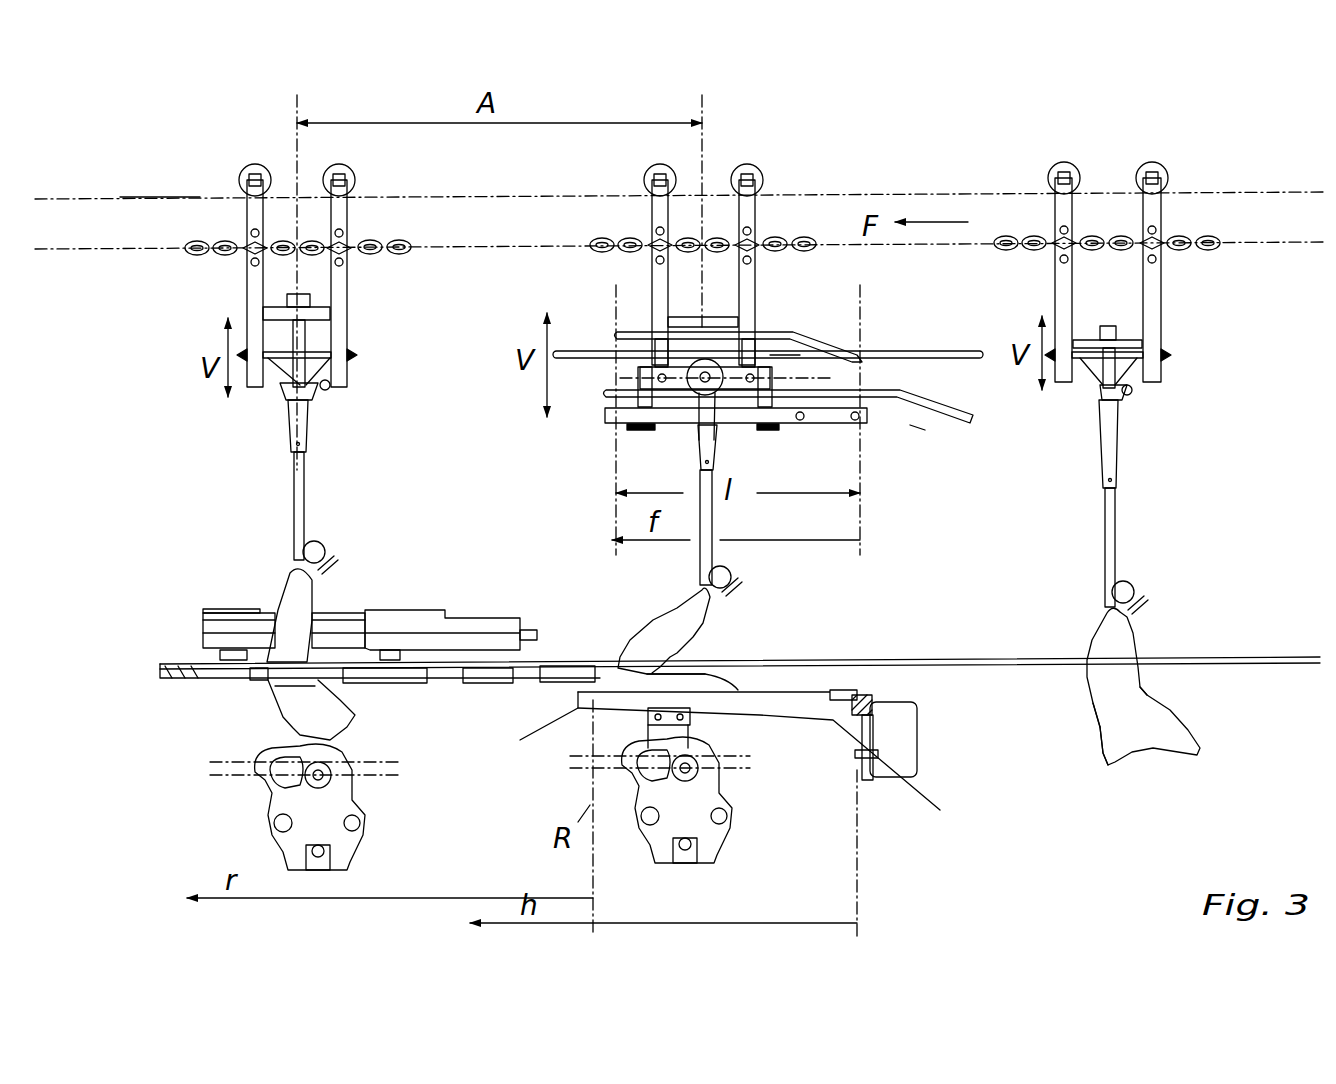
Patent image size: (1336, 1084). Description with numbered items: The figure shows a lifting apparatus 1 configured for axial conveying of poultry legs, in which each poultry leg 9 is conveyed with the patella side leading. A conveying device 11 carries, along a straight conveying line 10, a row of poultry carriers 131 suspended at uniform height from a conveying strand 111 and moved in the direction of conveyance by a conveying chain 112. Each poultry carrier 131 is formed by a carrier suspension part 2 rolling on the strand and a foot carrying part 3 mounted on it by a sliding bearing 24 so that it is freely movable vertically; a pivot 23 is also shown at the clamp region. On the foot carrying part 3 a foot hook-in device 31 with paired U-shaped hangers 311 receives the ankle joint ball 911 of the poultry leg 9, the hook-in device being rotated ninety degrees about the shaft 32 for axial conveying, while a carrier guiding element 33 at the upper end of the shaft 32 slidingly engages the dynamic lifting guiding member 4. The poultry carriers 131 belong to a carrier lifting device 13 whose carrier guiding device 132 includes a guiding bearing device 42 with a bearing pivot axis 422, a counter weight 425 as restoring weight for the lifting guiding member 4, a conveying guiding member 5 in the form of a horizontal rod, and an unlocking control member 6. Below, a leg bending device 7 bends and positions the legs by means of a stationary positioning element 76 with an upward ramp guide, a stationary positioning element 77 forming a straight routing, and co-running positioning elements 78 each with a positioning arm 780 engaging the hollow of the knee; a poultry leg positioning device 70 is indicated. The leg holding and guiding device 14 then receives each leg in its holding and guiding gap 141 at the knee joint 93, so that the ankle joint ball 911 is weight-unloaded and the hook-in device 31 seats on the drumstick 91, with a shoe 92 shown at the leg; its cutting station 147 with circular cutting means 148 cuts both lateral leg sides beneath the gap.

The lifting apparatus 1 is at (1010, 158).
The carrier suspension part 2 is at (245, 305).
The foot carrying part 3 is at (290, 440).
The dynamic lifting guiding member 4 is at (770, 326).
The conveying guiding member 5 is at (900, 350).
The unlocking control member 6 is at (895, 392).
The leg bending device 7 is at (590, 743).
The poultry leg 9 is at (292, 590).
The conveying line 10 is at (460, 195).
The conveying device 11 is at (140, 272).
The carrier lifting device 13 is at (905, 420).
The leg holding and guiding device 14 is at (350, 638).
The pivot pin 23 is at (332, 392).
The sliding bearing 24 is at (300, 385).
The foot hook-in device 31 is at (306, 495).
The shaft 32 is at (306, 340).
The carrier guiding element 33 is at (300, 312).
The guiding bearing device 42 is at (590, 405).
The poultry leg positioning device 70 is at (580, 770).
The stationary positioning element 76 is at (780, 728).
The stationary positioning element 77 is at (945, 662).
The co-running positioning element 78 is at (275, 800).
The drumstick 91 is at (312, 598).
The hook shoe 92 is at (1098, 740).
The knee joint 93 is at (1142, 688).
The conveying strand 111 is at (185, 195).
The conveying chain 112 is at (224, 256).
The poultry carrier 131 is at (787, 215).
The carrier guiding device 132 is at (759, 372).
The holding and guiding gap 141 is at (258, 672).
The cutting station 147 is at (215, 622).
The cutting means 148 is at (215, 672).
The hanger 311 is at (338, 568).
The bearing pivot axis 422 is at (790, 372).
The counter weight 425 is at (700, 392).
The positioning arm 780 is at (700, 672).
The ankle joint ball 911 is at (325, 553).